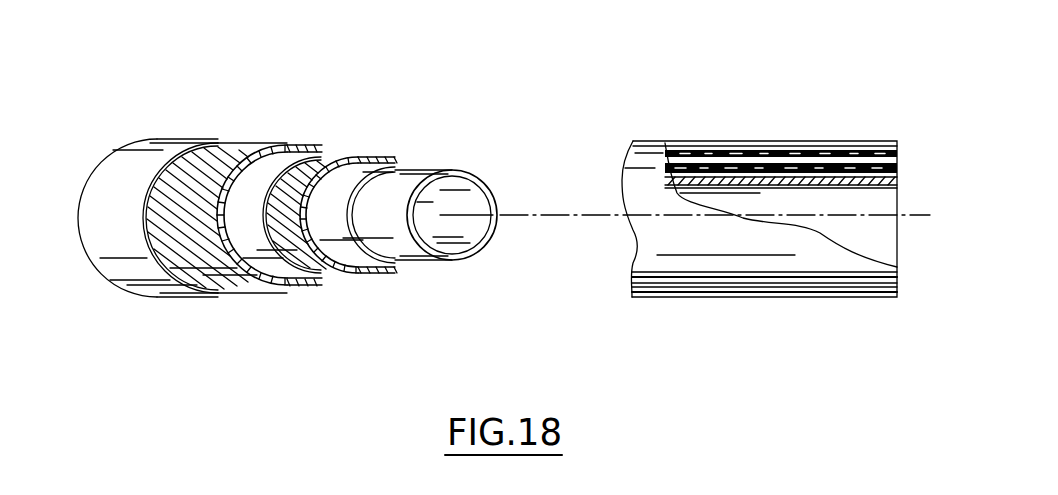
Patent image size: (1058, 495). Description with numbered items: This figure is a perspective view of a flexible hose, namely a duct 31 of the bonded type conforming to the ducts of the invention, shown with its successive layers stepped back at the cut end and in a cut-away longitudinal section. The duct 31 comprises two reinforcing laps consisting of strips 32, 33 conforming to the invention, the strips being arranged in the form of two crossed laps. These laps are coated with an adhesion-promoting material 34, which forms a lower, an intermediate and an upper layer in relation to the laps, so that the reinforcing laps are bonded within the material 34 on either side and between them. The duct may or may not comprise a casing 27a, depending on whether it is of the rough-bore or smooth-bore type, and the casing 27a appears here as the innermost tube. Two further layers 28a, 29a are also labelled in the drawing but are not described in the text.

The casing 27a is at (475, 170).
The intermediate layer 28a is at (757, 167).
The outer cover 29a is at (688, 148).
The duct 31 is at (549, 296).
The strip 32 is at (327, 283).
The strip 33 is at (237, 298).
The adhesion-promoting material 34 is at (180, 137).